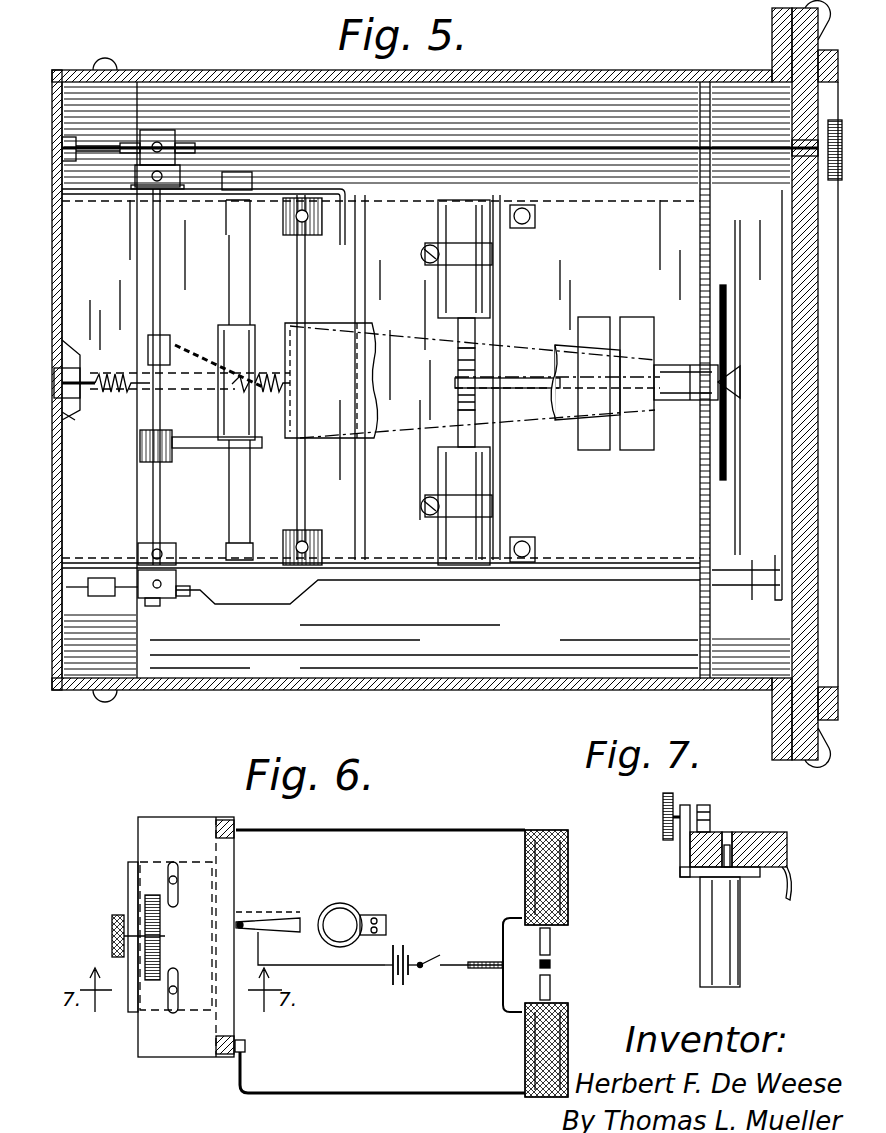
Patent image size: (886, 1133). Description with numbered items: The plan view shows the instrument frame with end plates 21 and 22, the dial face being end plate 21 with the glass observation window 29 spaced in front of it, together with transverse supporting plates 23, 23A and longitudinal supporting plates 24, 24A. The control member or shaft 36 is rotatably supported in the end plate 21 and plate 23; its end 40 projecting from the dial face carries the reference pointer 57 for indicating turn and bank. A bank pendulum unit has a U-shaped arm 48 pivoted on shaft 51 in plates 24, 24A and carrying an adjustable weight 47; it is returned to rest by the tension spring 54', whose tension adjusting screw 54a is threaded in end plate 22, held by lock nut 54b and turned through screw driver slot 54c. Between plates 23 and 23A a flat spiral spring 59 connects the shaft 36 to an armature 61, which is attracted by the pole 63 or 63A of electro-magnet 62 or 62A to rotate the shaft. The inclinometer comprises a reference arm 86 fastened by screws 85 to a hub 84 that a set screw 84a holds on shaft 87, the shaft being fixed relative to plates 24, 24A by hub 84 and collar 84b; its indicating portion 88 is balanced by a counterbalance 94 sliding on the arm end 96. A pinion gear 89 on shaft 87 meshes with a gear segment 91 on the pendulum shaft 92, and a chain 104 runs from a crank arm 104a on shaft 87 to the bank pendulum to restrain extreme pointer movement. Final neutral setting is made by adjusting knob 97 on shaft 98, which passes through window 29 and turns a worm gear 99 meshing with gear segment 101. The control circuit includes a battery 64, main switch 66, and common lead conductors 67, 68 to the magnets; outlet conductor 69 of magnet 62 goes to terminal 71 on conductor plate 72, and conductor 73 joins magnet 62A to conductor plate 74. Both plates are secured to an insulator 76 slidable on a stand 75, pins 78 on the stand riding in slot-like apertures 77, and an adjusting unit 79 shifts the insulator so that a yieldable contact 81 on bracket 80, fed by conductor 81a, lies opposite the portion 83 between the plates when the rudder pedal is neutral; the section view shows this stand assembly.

In FIG. 5, the end plate 22 is at (62, 519).
In FIG. 5, the glass observation window 29 is at (795, 635).
In FIG. 5, the end plate 21 is at (700, 523).
In FIG. 5, the shaft 98 is at (458, 147).
In FIG. 5, the adjusting knob 97 is at (812, 142).
In FIG. 5, the worm gear 99 is at (162, 140).
In FIG. 5, the gear segment 101 is at (132, 153).
In FIG. 5, the collar portion 84b is at (165, 188).
In FIG. 5, the intermediate supporting plate 24A is at (335, 189).
In FIG. 5, the shaft 87 is at (160, 258).
In FIG. 5, the pinion gear 89 is at (140, 446).
In FIG. 5, the gear segment 91 is at (205, 448).
In FIG. 5, the set screw 84a is at (170, 546).
In FIG. 5, the hub 84 is at (178, 586).
In FIG. 5, the arm end 96 is at (152, 604).
In FIG. 5, the screws 85 is at (186, 596).
In FIG. 5, the counterbalance 94 is at (104, 598).
In FIG. 5, the intermediate supporting plate 24 is at (270, 604).
In FIG. 5, the shaft 92 is at (250, 492).
In FIG. 5, the chain 104 is at (214, 352).
In FIG. 5, the crank arm 104a is at (166, 333).
In FIG. 5, the lock nut 54b is at (68, 366).
In FIG. 5, the tension adjusting screw 54a is at (108, 374).
In FIG. 5, the screw driver slot 54c is at (64, 414).
In FIG. 5, the tension spring 54' is at (190, 394).
In FIG. 5, the pivot shaft 51 is at (306, 289).
In FIG. 5, the intermediate supporting plate 23A is at (357, 505).
In FIG. 5, the intermediate supporting plate 23 is at (502, 273).
In FIG. 5, the electro-magnet 62A is at (482, 222).
In FIG. 6, the electro-magnet 62A is at (568, 879).
In FIG. 5, the electro-magnet 62 is at (490, 490).
In FIG. 6, the electro-magnet 62 is at (568, 1019).
In FIG. 5, the pole 63A is at (462, 332).
In FIG. 6, the pole 63A is at (550, 938).
In FIG. 5, the spiral spring 59 is at (460, 398).
In FIG. 5, the pole 63 is at (460, 430).
In FIG. 6, the pole 63 is at (550, 983).
In FIG. 5, the control shaft 36 is at (560, 402).
In FIG. 5, the arm 48 is at (582, 345).
In FIG. 5, the adjustable weight 47 is at (642, 320).
In FIG. 5, the reference pointer 57 is at (724, 400).
In FIG. 5, the end of control member 40 is at (740, 384).
In FIG. 5, the indicating portion 88 is at (782, 318).
In FIG. 5, the reference arm 86 is at (630, 570).
In FIG. 6, the conductor plate 74 is at (234, 866).
In FIG. 6, the conductor plate 72 is at (218, 1010).
In FIG. 7, the conductor plate 72 is at (788, 869).
In FIG. 6, the portion between conductor plates 83 is at (214, 935).
In FIG. 6, the slot-like apertures 77 is at (168, 866).
In FIG. 7, the slot-like apertures 77 is at (727, 832).
In FIG. 6, the pins 78 is at (169, 881).
In FIG. 7, the pins 78 is at (698, 876).
In FIG. 6, the terminal 71 is at (246, 1050).
In FIG. 6, the conductor 73 is at (440, 829).
In FIG. 6, the outlet conductor 69 is at (400, 1092).
In FIG. 6, the yieldable electrical contact 81 is at (262, 918).
In FIG. 6, the conductor 81a is at (330, 968).
In FIG. 6, the bracket 80 is at (346, 905).
In FIG. 6, the battery 64 is at (395, 982).
In FIG. 6, the main switch 66 is at (426, 963).
In FIG. 6, the common lead conductor 67 is at (478, 970).
In FIG. 6, the common lead conductor 68 is at (504, 922).
In FIG. 6, the armature 61 is at (550, 963).
In FIG. 7, the insulator 76 is at (770, 832).
In FIG. 7, the adjusting unit 79 is at (680, 806).
In FIG. 7, the stand 75 is at (740, 948).